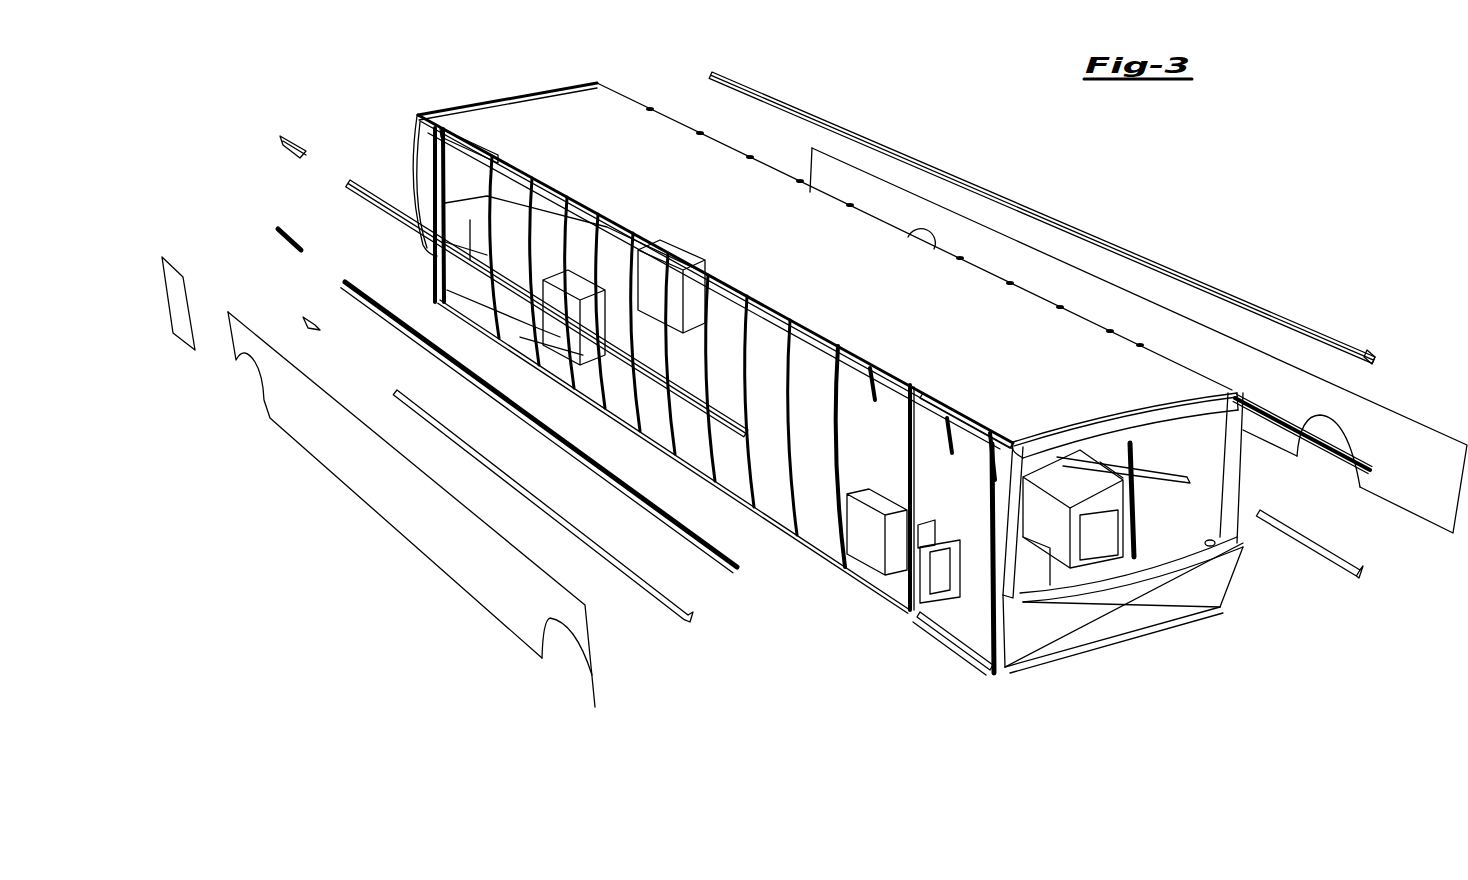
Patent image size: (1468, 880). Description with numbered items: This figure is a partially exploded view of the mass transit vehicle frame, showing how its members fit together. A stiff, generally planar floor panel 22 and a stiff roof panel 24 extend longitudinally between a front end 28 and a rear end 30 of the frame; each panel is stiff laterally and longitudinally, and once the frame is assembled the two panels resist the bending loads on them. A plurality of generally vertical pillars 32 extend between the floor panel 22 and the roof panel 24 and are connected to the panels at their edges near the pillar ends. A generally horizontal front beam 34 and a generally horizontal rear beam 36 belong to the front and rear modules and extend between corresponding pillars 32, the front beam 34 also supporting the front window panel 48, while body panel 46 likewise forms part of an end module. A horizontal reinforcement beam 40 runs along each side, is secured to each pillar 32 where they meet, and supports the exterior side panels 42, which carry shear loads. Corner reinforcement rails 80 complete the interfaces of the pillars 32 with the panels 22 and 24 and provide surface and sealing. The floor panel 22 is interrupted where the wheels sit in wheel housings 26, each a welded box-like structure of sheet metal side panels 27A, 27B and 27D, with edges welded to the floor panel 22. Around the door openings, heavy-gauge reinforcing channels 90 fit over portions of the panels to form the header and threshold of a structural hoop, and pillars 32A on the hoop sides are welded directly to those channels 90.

The floor panel 22 is at (824, 425).
The roof panel 24 is at (790, 241).
The wheel housing 26 is at (872, 595).
The side panel 27A is at (937, 580).
The side panel 27B is at (923, 530).
The side panel 27D is at (1037, 533).
The front end 28 is at (1127, 664).
The rear end 30 is at (483, 95).
The pillar 32 is at (605, 393).
The pillar 32A is at (499, 172).
The front beam 34 is at (1215, 547).
The rear beam 36 is at (413, 198).
The horizontal reinforcement beam 40 is at (677, 513).
The exterior side panel 42 is at (175, 300).
The body panel 46 is at (1073, 633).
The front window panel 48 is at (470, 220).
The corner reinforcement rail 80 is at (1230, 288).
The reinforcing channel 90 is at (478, 146).